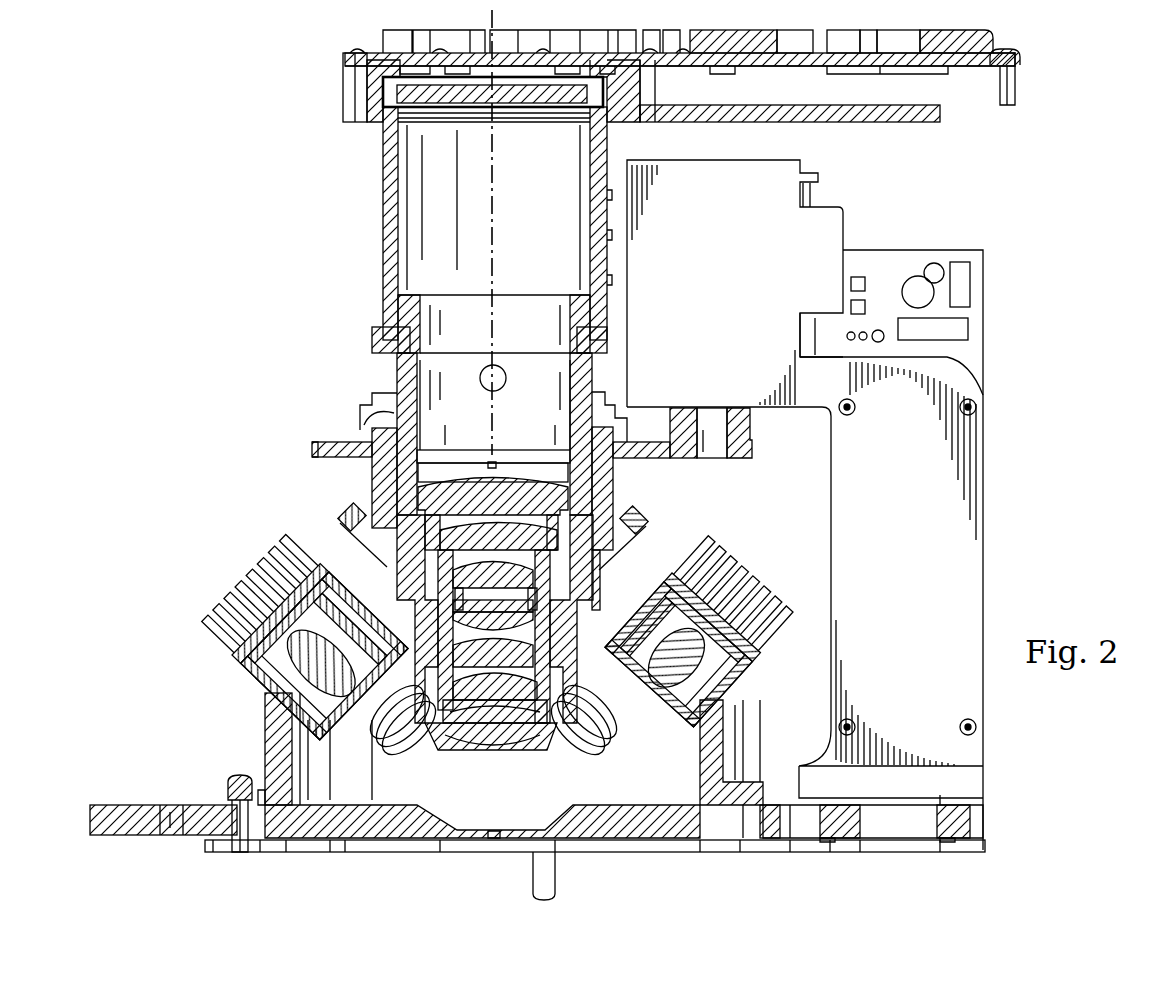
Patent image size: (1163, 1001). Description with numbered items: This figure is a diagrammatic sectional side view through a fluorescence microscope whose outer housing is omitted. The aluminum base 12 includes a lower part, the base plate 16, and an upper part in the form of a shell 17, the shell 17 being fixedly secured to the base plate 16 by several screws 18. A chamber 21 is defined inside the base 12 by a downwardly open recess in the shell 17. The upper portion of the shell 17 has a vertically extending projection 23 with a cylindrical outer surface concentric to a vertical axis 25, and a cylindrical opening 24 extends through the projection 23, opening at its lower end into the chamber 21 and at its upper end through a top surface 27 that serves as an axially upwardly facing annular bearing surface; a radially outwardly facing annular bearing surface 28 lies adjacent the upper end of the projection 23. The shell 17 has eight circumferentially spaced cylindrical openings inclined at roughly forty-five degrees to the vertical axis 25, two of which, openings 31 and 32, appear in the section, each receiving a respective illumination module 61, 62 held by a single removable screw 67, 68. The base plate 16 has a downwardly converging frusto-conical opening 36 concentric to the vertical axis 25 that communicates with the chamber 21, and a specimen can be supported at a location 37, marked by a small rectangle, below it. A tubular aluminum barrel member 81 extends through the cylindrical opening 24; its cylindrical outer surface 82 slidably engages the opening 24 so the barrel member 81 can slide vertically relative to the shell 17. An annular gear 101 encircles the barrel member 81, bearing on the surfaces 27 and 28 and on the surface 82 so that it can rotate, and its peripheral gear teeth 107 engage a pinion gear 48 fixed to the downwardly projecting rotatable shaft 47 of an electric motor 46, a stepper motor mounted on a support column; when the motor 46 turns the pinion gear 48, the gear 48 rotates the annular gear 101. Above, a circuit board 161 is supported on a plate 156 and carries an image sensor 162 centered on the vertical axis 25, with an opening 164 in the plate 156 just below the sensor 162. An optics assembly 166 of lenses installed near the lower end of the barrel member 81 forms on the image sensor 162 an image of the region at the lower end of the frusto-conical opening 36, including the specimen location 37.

The base 12 is at (262, 735).
The base plate 16 is at (985, 830).
The shell 17 is at (269, 772).
The screws 18 is at (228, 797).
The chamber 21 is at (702, 776).
The projection 23 is at (375, 495).
The cylindrical opening 24 is at (418, 420).
The vertical axis 25 is at (489, 36).
The top surface 27 is at (368, 408).
The annular bearing surface 28 is at (364, 432).
The cylindrical opening 31 is at (258, 690).
The cylindrical opening 32 is at (742, 685).
The frusto-conical opening 36 is at (423, 806).
The specimen location 37 is at (498, 831).
The electric motor 46 is at (736, 272).
The rotatable shaft 47 is at (708, 460).
The pinion gear 48 is at (748, 450).
The illumination module 61 is at (269, 539).
The illumination module 62 is at (746, 563).
The screw 67 is at (327, 552).
The screw 68 is at (666, 552).
The barrel member 81 is at (382, 338).
The cylindrical outer surface 82 is at (397, 372).
The annular gear 101 is at (312, 446).
The gear teeth 107 is at (311, 455).
The plate 156 is at (940, 112).
The circuit board 161 is at (1019, 57).
The image sensor 162 is at (470, 110).
The opening 164 is at (581, 112).
The optics assembly 166 is at (518, 440).